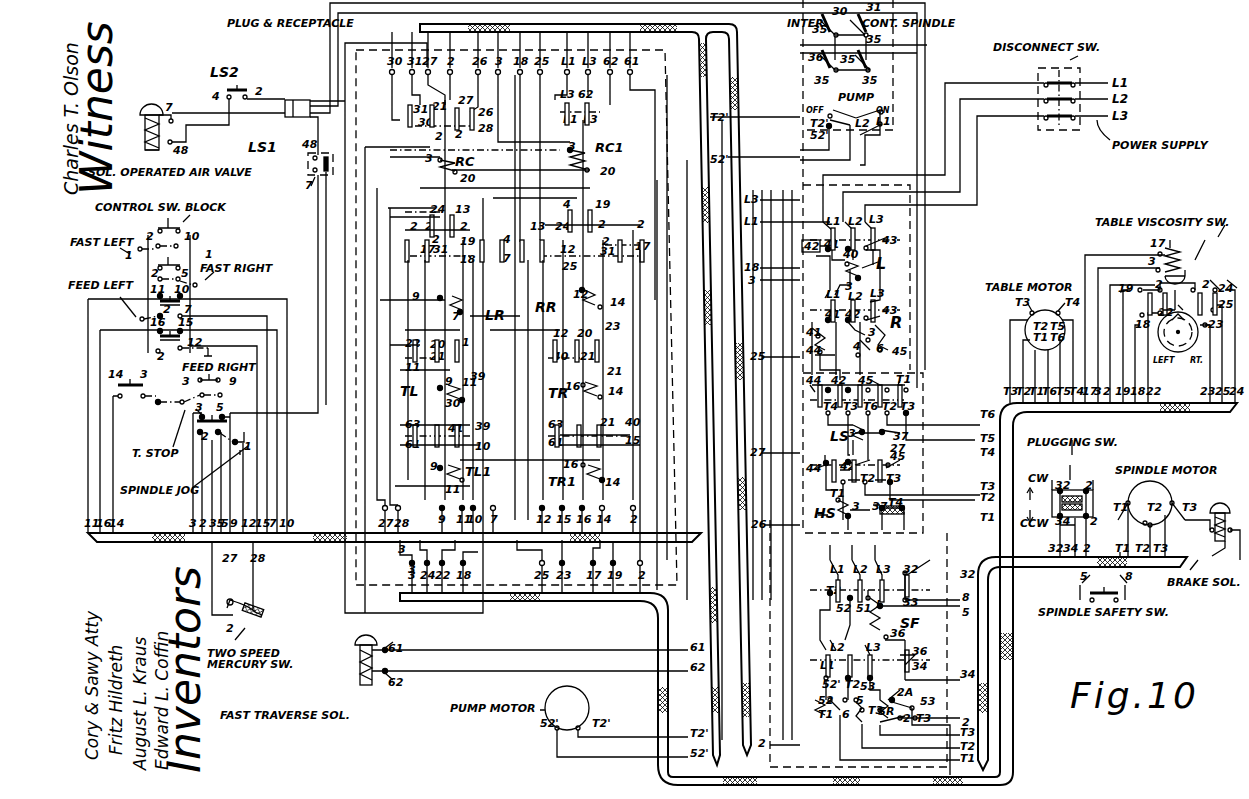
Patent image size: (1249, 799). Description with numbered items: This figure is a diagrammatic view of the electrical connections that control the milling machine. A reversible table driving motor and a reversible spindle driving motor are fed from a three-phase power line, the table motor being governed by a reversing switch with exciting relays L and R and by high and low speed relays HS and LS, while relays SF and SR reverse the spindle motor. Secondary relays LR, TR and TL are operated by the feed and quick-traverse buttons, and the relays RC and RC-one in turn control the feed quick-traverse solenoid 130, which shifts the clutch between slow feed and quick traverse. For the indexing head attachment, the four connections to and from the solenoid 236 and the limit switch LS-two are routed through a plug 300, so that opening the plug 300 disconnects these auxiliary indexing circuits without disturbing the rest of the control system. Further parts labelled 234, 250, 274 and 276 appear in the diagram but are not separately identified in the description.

The feed quick-traverse solenoid 130 is at (358, 680).
The solenoid of air valve 234 is at (151, 112).
The solenoid 236 is at (140, 146).
The limit switch LS1 250 is at (324, 178).
The limit switch LS2 274 is at (228, 86).
The conductor to limit switch 276 is at (201, 121).
The plug 300 is at (293, 100).